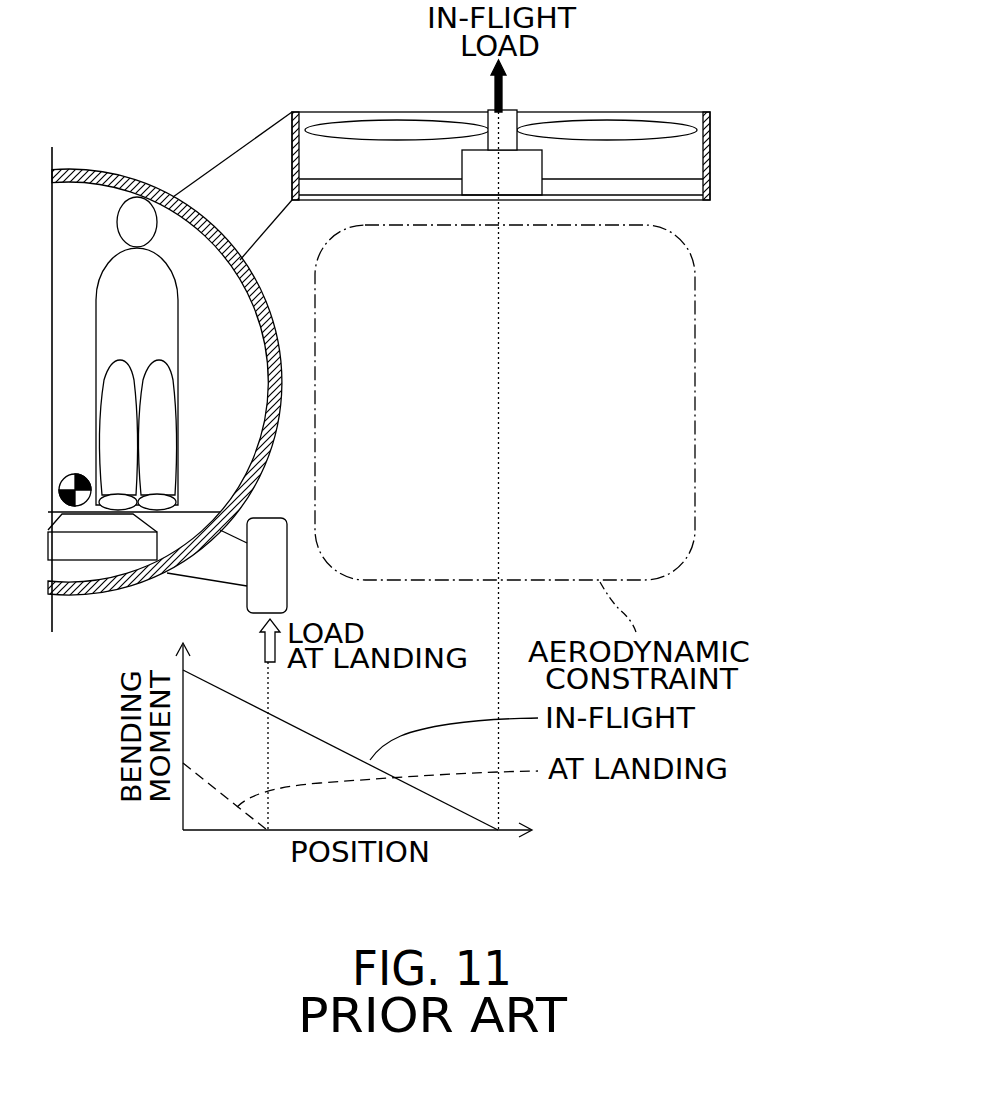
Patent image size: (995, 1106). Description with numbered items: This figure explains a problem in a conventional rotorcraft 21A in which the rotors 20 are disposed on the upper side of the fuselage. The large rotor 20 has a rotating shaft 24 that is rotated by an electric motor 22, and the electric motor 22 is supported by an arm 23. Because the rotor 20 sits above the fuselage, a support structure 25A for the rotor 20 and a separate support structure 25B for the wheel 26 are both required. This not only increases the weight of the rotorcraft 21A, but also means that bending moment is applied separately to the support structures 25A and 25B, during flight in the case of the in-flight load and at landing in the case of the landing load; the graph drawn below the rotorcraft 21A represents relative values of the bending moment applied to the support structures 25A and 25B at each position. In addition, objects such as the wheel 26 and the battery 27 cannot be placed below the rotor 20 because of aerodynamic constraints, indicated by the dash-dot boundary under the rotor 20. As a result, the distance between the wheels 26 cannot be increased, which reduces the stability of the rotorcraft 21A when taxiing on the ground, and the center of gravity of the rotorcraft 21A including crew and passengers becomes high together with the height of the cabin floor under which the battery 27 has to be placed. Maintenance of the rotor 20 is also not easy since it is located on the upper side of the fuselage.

The conventional rotorcraft 21A is at (212, 97).
The rotor 20 is at (590, 115).
The electric motor 22 is at (478, 165).
The arm 23 is at (318, 188).
The rotating shaft 24 is at (507, 120).
The support structure for the rotor 25A is at (240, 170).
The support structure for the wheel 25B is at (218, 572).
The wheel 26 is at (267, 530).
The battery 27 is at (95, 552).